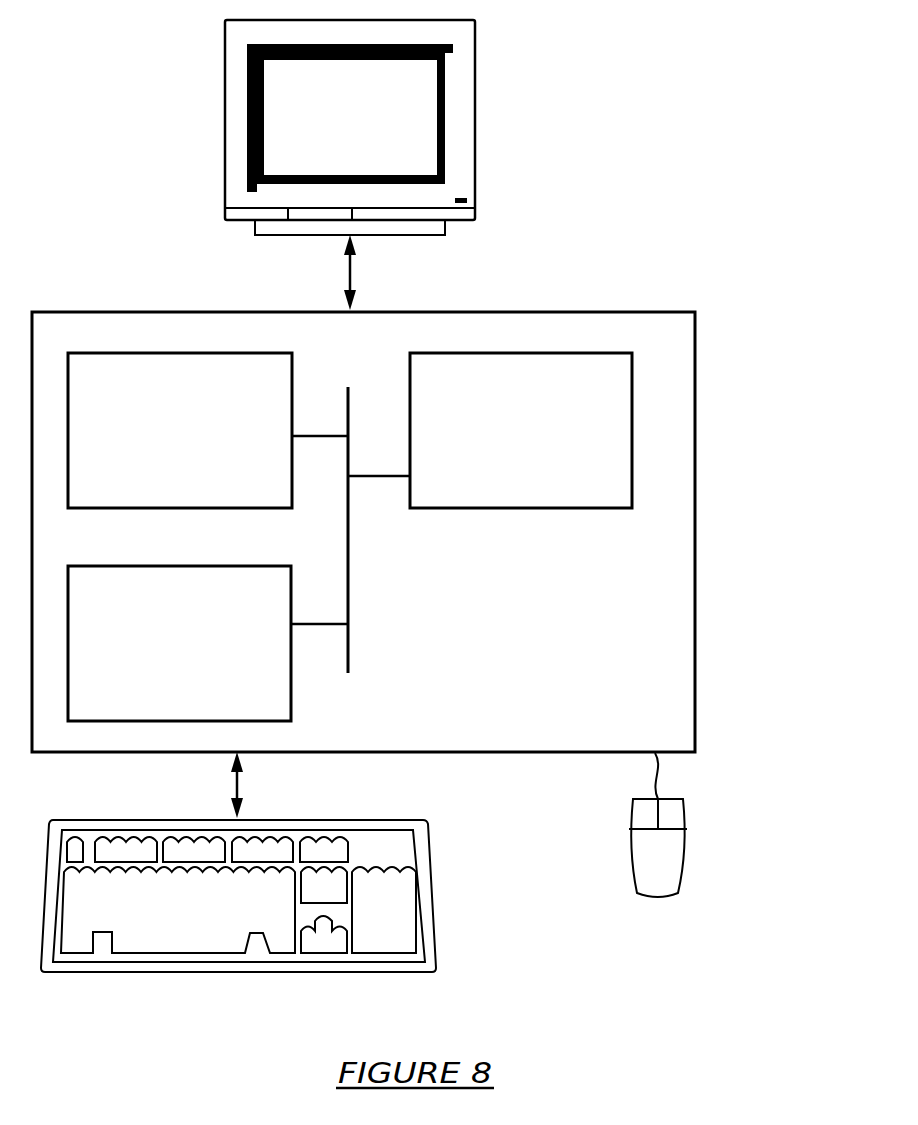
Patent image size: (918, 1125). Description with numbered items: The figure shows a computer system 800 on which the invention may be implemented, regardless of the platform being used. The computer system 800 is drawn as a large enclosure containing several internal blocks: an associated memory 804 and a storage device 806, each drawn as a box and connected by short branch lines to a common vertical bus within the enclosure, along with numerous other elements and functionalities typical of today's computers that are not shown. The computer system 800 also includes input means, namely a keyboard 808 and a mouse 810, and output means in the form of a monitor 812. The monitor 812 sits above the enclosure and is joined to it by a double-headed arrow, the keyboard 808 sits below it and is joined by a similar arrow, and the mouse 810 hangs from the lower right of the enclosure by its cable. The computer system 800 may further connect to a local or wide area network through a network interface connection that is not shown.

The computer system 800 is at (718, 171).
The associated memory 804 is at (160, 441).
The storage device 806 is at (495, 441).
The keyboard 808 is at (153, 927).
The mouse 810 is at (638, 873).
The monitor 812 is at (330, 132).